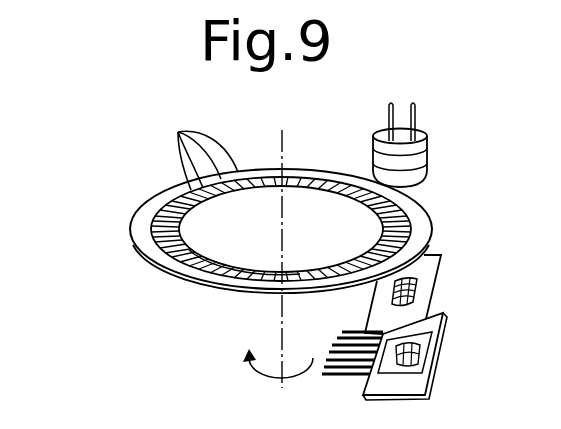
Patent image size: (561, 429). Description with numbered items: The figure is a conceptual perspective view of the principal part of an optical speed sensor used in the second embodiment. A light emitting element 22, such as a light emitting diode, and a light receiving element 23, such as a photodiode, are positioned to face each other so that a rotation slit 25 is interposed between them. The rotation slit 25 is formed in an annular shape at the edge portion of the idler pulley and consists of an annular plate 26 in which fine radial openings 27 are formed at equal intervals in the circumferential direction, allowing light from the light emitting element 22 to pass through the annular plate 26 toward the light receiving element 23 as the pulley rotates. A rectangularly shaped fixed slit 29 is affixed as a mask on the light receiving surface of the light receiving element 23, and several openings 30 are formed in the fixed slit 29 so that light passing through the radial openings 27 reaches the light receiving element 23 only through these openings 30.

The light emitting element 22 is at (425, 160).
The light receiving element 23 is at (446, 319).
The rotation slit 25 is at (270, 196).
The annular plate 26 is at (417, 228).
The radial openings 27 is at (195, 144).
The fixed slit 29 is at (441, 292).
The openings 30 is at (417, 287).